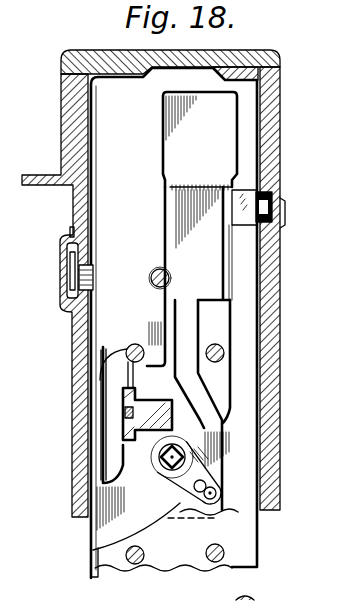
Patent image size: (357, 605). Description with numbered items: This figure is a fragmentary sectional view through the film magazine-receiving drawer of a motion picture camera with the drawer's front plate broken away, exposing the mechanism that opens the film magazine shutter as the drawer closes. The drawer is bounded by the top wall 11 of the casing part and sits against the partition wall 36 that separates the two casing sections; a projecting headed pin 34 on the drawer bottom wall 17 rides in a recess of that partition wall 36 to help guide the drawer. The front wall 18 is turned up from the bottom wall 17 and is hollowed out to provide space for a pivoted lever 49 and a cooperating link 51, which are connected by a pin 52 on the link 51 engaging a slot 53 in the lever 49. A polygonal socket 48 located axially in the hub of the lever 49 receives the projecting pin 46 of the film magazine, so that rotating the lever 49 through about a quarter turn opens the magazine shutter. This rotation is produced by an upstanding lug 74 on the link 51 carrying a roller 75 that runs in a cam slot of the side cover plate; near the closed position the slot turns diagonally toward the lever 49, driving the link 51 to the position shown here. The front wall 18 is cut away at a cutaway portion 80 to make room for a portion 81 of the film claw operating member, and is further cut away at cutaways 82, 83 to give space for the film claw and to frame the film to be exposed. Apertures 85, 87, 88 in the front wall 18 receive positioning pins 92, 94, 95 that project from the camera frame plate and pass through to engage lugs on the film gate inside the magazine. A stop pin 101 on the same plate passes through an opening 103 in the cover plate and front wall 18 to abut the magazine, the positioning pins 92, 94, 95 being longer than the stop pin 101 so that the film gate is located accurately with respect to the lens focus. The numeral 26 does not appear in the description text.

The top wall 11 is at (118, 58).
The bottom wall 17 is at (100, 362).
The front wall 18 is at (110, 332).
The slide member 26 is at (170, 76).
The link 51 is at (212, 276).
The upstanding lug 74 is at (250, 226).
The roller 75 is at (270, 205).
The stop pin 101 is at (158, 268).
The opening 103 is at (151, 278).
The headed pin 34 is at (82, 275).
The cutaway 82 is at (143, 360).
The aperture 85 is at (128, 345).
The pin 92 is at (223, 355).
The partition wall 36 is at (100, 425).
The cutaway portion 80 is at (125, 371).
The portion of the film claw operating member 81 is at (123, 430).
The projecting pin 46 is at (232, 413).
The polygonal socket 48 is at (188, 437).
The cutaway 83 is at (156, 467).
The slot 53 is at (196, 476).
The pin 52 is at (220, 500).
The pivoted lever 49 is at (190, 508).
The aperture 88 is at (136, 563).
The pin 95 is at (223, 553).
The aperture 87 is at (218, 560).
The pin 94 is at (100, 557).